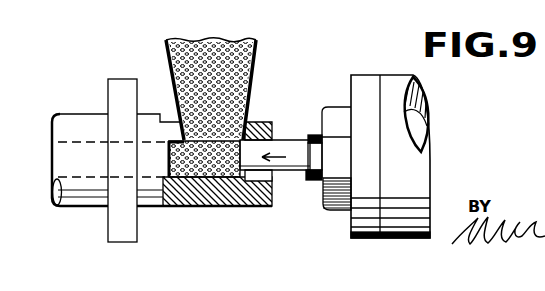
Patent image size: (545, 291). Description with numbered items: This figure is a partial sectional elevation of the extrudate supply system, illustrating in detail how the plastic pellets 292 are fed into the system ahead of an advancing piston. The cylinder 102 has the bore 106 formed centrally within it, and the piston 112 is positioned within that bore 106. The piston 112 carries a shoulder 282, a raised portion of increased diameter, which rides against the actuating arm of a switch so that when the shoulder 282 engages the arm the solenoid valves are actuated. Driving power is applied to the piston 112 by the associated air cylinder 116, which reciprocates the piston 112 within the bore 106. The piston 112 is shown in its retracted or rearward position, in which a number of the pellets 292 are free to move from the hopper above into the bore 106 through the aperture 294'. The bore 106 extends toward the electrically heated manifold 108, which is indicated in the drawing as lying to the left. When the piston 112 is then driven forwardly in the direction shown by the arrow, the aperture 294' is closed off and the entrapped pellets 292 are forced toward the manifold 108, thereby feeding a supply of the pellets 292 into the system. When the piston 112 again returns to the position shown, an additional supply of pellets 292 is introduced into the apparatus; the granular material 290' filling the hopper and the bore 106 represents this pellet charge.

The cylinder 102 is at (194, 205).
The bore 106 is at (213, 155).
The electrically heated manifold 108 is at (55, 145).
The piston 112 is at (288, 142).
The air cylinder 116 is at (435, 122).
The shoulder 282 is at (309, 182).
The granular material 290' is at (246, 90).
The pellets 292 is at (203, 58).
The aperture 294' is at (136, 150).